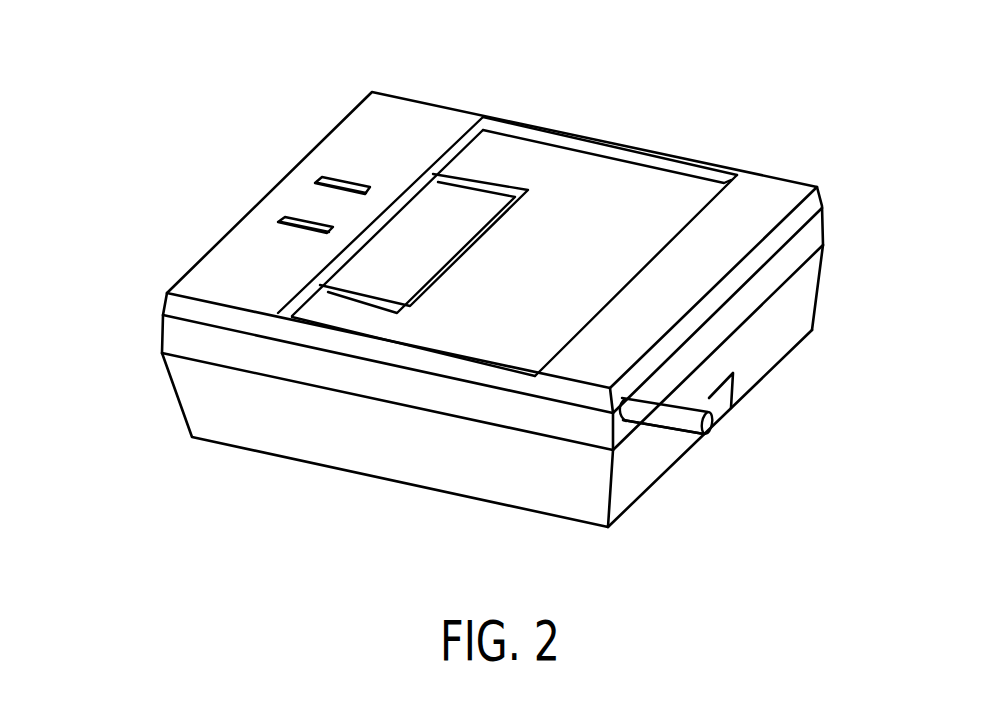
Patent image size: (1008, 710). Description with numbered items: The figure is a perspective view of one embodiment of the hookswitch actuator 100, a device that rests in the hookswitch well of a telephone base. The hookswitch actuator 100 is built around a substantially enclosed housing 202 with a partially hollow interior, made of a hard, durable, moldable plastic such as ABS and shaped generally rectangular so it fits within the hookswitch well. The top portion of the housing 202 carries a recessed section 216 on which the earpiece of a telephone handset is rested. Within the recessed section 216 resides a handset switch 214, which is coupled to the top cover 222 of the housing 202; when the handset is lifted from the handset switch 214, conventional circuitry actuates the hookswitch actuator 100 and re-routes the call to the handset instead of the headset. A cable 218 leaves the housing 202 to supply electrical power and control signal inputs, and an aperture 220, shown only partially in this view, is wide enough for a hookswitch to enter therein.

The hookswitch actuator 100 is at (163, 25).
The housing 202 is at (764, 163).
The handset switch 214 is at (423, 258).
The recessed section 216 is at (576, 202).
The cable 218 is at (677, 416).
The aperture 220 is at (718, 416).
The top cover 222 is at (225, 282).